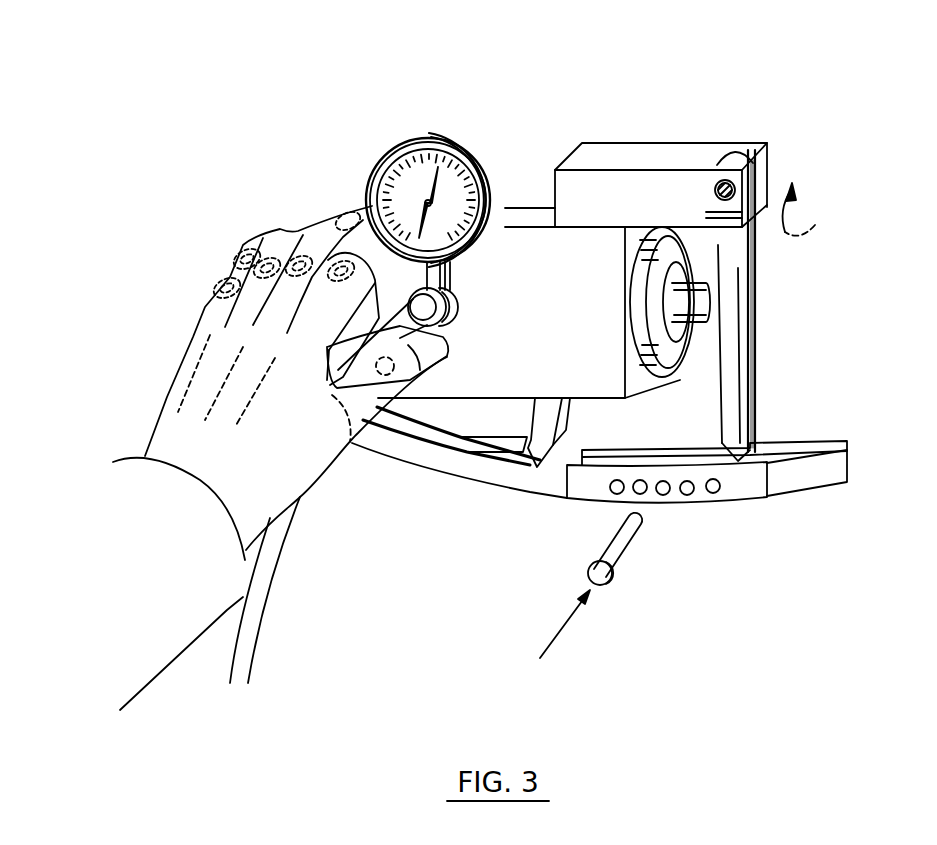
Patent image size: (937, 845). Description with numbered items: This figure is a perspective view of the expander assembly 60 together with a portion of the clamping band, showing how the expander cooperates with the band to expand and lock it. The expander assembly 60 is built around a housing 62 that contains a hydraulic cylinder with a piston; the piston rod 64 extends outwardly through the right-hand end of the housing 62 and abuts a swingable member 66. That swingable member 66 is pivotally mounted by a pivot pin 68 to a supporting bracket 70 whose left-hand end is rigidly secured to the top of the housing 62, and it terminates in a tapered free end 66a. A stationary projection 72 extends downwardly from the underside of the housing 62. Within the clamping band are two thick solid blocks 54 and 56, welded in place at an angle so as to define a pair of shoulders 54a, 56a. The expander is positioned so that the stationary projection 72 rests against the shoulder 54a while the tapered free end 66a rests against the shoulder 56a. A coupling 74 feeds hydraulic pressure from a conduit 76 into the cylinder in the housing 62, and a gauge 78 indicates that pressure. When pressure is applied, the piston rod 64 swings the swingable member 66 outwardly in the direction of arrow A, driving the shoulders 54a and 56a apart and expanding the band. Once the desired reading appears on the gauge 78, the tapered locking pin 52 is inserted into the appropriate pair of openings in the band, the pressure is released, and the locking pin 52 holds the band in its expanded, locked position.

The tapered locking pin 52 is at (635, 542).
The thick solid block 54 is at (450, 435).
The shoulder 54a is at (530, 468).
The thick solid block 56 is at (805, 449).
The shoulder 56a is at (795, 444).
The expander assembly 60 is at (494, 44).
The housing 62 is at (562, 302).
The piston rod 64 is at (695, 300).
The swingable member 66 is at (768, 305).
The tapered free end 66a is at (760, 442).
The pivot pin 68 is at (722, 180).
The supporting bracket 70 is at (607, 148).
The stationary projection 72 is at (550, 418).
The coupling 74 is at (441, 313).
The conduit 76 is at (282, 543).
The gauge 78 is at (398, 145).